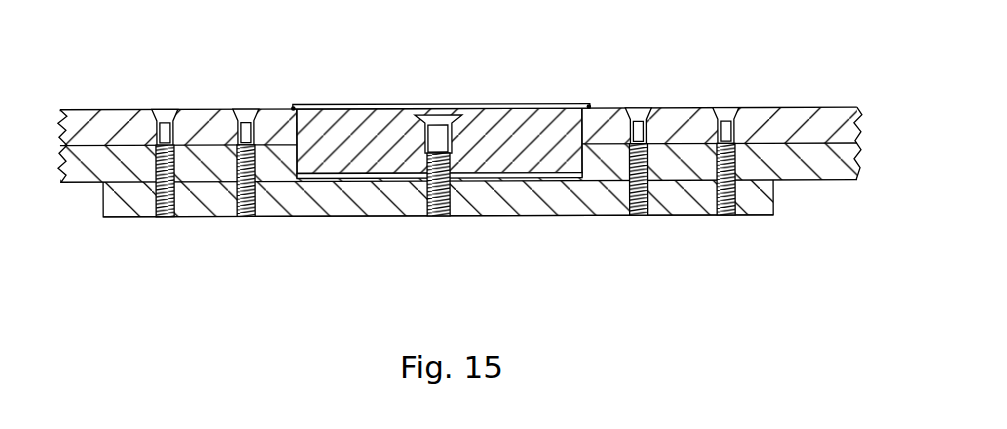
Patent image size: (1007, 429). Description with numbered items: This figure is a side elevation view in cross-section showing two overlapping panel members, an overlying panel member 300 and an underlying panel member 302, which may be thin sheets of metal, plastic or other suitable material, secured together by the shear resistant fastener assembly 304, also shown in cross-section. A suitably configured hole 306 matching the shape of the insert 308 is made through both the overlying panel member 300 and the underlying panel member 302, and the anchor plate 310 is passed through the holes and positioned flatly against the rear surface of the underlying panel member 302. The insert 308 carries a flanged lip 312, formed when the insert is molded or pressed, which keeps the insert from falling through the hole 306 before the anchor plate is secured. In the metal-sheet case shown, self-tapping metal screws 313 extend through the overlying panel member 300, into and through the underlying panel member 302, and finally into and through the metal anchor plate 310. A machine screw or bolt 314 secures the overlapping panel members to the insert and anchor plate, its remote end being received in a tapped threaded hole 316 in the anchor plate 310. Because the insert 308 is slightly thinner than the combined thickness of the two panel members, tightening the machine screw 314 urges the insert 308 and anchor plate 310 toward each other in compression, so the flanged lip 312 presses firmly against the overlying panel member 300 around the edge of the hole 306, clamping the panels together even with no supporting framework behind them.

The overlying panel member 300 is at (700, 107).
The underlying panel member 302 is at (802, 185).
The shear resistant fastener assembly 304 is at (380, 58).
The hole 306 is at (563, 106).
The insert 308 is at (507, 113).
The anchor plate 310 is at (499, 235).
The flanged lip 312 is at (294, 107).
The self-tapping metal screws 313 is at (157, 111).
The machine screw 314 is at (442, 113).
The tapped threaded hole 316 is at (438, 216).